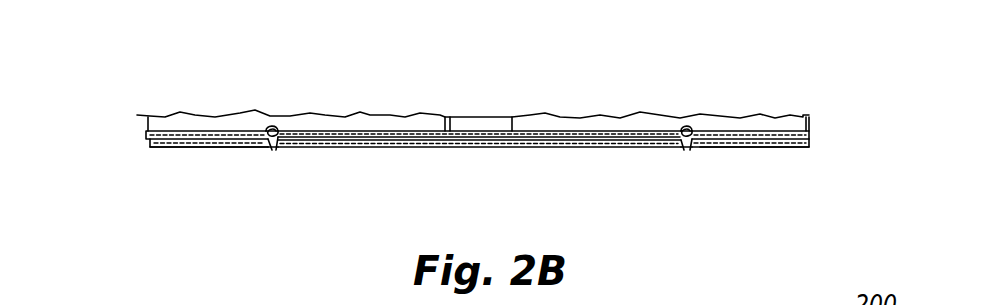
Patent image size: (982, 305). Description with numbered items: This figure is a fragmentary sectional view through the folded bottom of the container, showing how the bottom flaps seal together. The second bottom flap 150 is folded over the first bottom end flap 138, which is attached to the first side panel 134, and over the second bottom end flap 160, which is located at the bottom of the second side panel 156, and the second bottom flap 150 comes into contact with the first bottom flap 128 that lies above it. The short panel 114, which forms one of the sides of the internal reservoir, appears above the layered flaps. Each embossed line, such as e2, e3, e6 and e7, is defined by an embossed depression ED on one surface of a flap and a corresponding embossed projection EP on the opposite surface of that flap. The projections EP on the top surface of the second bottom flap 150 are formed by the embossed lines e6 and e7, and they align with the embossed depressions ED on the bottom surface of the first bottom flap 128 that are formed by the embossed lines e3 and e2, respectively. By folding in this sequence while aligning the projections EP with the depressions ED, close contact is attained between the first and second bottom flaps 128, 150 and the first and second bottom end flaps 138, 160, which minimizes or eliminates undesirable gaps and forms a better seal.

The first bottom flap 128 is at (197, 130).
The second bottom flap 150 is at (223, 147).
The second side panel 156 is at (146, 129).
The second bottom end flap 160 is at (181, 147).
The short panel 114 is at (453, 120).
The first side panel 134 is at (812, 126).
The first bottom end flap 138 is at (784, 148).
The embossed projection EP is at (267, 130).
The embossed depression ED is at (272, 150).
The embossed line e2 is at (689, 118).
The embossed line e3 is at (286, 123).
The embossed line e6 is at (286, 153).
The embossed line e7 is at (705, 157).